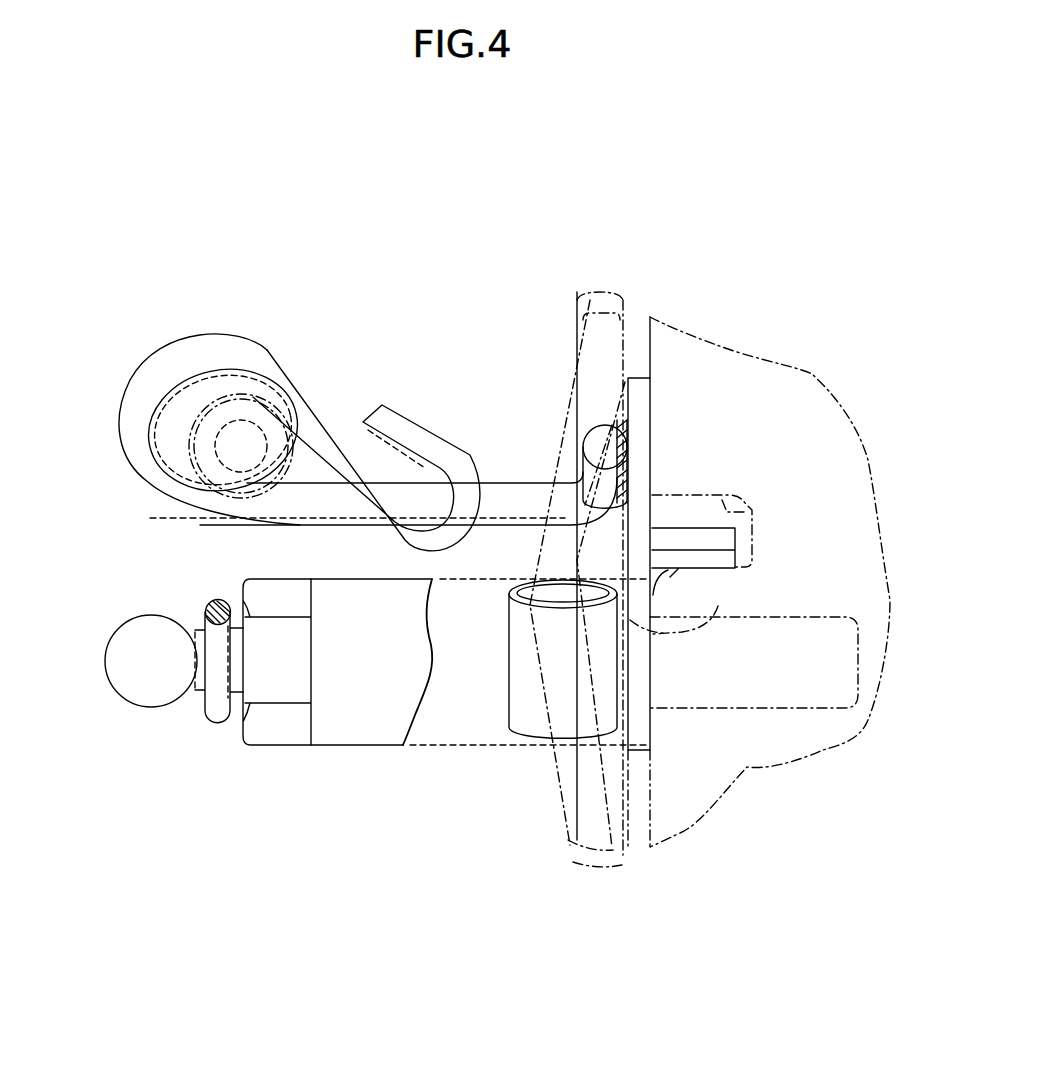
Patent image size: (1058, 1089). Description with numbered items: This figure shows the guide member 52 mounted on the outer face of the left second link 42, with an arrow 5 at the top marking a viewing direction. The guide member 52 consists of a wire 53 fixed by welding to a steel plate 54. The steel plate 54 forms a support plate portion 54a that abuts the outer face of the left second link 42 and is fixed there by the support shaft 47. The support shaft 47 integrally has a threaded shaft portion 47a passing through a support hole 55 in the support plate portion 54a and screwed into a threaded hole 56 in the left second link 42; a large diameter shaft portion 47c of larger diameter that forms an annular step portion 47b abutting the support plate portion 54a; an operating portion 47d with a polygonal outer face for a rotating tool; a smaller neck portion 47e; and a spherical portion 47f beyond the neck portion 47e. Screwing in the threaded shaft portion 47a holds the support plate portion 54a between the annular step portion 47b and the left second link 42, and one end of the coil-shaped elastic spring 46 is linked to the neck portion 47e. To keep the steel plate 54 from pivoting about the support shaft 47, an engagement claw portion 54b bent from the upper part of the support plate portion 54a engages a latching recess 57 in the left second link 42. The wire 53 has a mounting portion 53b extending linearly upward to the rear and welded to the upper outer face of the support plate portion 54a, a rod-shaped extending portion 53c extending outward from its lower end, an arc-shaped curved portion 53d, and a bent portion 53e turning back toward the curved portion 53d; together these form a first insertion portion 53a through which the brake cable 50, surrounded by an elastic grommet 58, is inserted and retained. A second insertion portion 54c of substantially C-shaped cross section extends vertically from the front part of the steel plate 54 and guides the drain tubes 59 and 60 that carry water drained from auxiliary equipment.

The viewing direction arrow 5 is at (452, 210).
The left second link 42 is at (747, 767).
The coil-shaped elastic spring 46 is at (217, 596).
The support shaft 47 is at (475, 633).
The threaded shaft portion 47a is at (773, 617).
The annular step portion 47b is at (653, 753).
The large diameter shaft portion 47c is at (380, 727).
The operating portion 47d is at (280, 735).
The neck portion 47e is at (220, 685).
The spherical portion 47f is at (136, 680).
The brake cable 50 is at (258, 440).
The guide member 52 is at (425, 337).
The wire 53 is at (378, 453).
The first insertion portion 53a is at (118, 442).
The mounting portion 53b is at (630, 470).
The rod-shaped extending portion 53c is at (500, 517).
The curved portion 53d is at (225, 346).
The bent portion 53e is at (437, 452).
The steel plate 54 is at (613, 534).
The support plate portion 54a is at (634, 472).
The engagement claw portion 54b is at (694, 540).
The second insertion portion 54c is at (513, 700).
The support hole 55 is at (683, 609).
The threaded hole 56 is at (800, 707).
The latching recess 57 is at (762, 502).
The grommet 58 is at (136, 388).
The drain tube 59 is at (553, 760).
The drain tube 60 is at (583, 860).